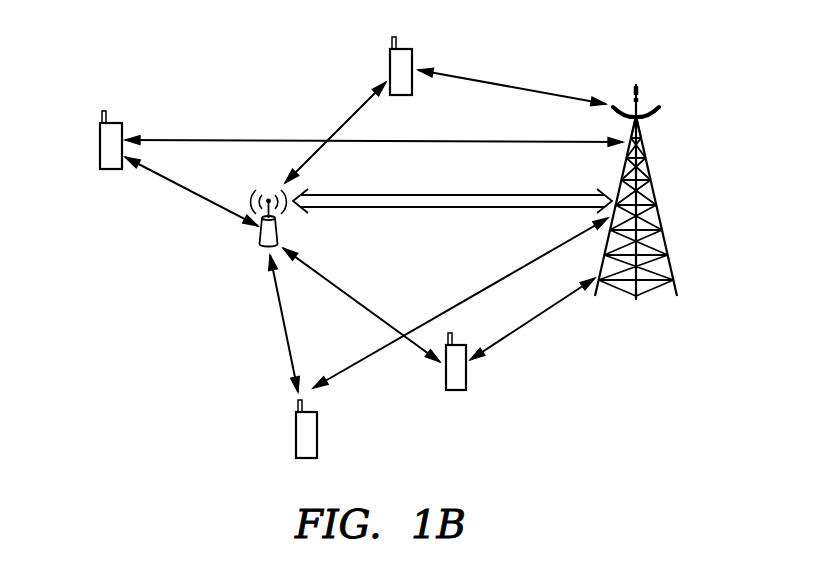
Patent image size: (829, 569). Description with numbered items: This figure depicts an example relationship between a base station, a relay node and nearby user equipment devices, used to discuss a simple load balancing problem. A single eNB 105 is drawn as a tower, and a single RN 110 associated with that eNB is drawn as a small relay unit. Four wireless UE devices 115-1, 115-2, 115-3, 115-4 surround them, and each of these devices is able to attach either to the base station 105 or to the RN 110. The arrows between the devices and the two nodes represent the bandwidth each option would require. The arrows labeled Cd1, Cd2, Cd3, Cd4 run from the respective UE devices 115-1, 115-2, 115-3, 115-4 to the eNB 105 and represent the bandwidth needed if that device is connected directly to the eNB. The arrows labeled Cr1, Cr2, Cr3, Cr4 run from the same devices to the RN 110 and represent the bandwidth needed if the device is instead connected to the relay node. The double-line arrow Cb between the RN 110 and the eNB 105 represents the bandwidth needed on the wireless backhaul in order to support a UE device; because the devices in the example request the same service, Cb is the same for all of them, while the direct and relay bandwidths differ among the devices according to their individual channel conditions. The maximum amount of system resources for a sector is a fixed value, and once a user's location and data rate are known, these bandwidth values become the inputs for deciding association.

The eNB 105 is at (697, 199).
The RN 110 is at (310, 238).
The wireless UE device 115-1 is at (453, 392).
The wireless UE device 115-2 is at (318, 434).
The wireless UE device 115-3 is at (110, 172).
The wireless UE device 115-4 is at (412, 52).
The direct connection bandwidth Cd1 is at (562, 343).
The direct connection bandwidth Cd2 is at (488, 255).
The direct connection bandwidth Cd3 is at (229, 123).
The direct connection bandwidth Cd4 is at (518, 64).
The relay connection bandwidth Cr1 is at (357, 272).
The relay connection bandwidth Cr2 is at (314, 312).
The relay connection bandwidth Cr3 is at (200, 166).
The relay connection bandwidth Cr4 is at (396, 119).
The wireless backhaul bandwidth Cb is at (430, 186).